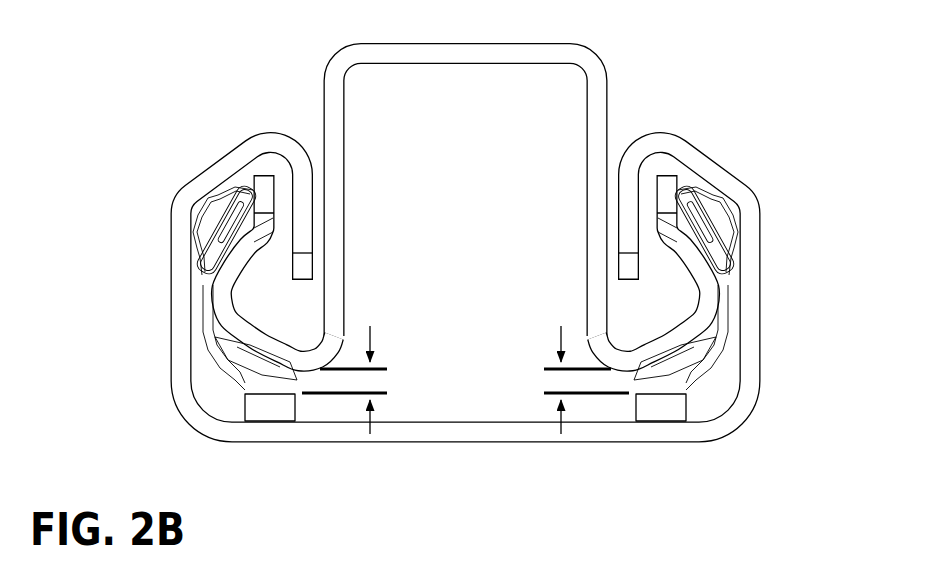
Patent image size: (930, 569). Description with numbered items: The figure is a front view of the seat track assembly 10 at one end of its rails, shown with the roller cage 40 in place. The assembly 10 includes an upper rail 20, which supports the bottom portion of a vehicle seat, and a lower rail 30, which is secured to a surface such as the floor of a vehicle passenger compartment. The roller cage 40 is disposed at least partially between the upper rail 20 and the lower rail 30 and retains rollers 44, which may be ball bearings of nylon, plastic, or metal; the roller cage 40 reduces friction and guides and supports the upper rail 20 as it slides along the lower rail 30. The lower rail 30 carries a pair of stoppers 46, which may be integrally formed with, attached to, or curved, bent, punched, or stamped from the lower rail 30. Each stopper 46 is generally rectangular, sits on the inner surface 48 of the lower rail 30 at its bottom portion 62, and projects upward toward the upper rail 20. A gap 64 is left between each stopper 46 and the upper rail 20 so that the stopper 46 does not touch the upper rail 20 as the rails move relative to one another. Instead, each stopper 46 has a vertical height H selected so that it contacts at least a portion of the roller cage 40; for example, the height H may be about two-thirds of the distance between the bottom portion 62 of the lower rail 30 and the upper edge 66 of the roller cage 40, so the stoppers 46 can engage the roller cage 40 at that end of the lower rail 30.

The seat track assembly 10 is at (209, 80).
The upper rail 20 is at (322, 97).
The lower rail 30 is at (175, 197).
The roller cage 40 is at (231, 364).
The roller 44 is at (242, 334).
The stopper 46 is at (301, 413).
The inner surface 48 is at (467, 347).
The bottom portion 62 is at (498, 453).
The gap 64 is at (371, 340).
The upper edge 66 is at (256, 346).
The height H is at (680, 89).